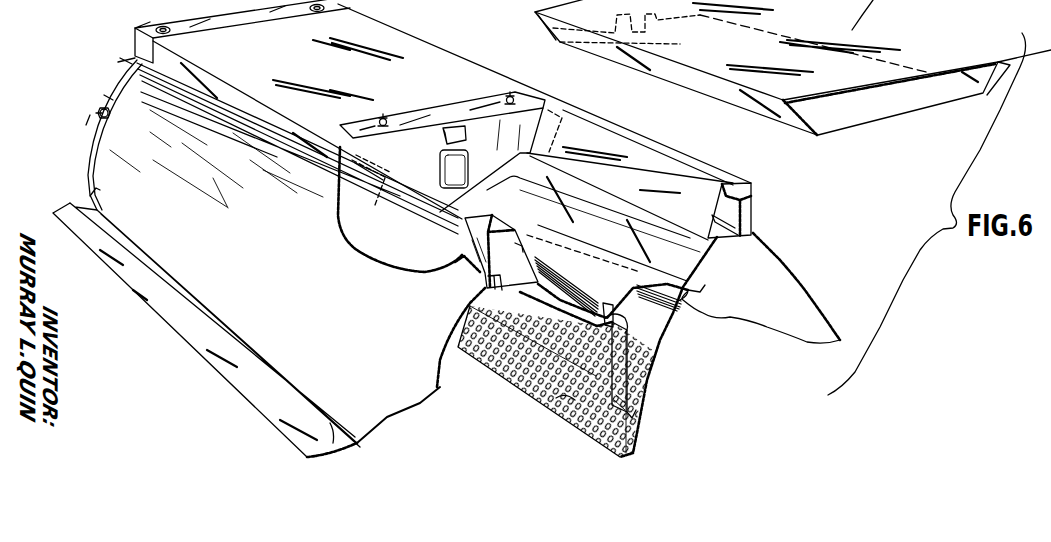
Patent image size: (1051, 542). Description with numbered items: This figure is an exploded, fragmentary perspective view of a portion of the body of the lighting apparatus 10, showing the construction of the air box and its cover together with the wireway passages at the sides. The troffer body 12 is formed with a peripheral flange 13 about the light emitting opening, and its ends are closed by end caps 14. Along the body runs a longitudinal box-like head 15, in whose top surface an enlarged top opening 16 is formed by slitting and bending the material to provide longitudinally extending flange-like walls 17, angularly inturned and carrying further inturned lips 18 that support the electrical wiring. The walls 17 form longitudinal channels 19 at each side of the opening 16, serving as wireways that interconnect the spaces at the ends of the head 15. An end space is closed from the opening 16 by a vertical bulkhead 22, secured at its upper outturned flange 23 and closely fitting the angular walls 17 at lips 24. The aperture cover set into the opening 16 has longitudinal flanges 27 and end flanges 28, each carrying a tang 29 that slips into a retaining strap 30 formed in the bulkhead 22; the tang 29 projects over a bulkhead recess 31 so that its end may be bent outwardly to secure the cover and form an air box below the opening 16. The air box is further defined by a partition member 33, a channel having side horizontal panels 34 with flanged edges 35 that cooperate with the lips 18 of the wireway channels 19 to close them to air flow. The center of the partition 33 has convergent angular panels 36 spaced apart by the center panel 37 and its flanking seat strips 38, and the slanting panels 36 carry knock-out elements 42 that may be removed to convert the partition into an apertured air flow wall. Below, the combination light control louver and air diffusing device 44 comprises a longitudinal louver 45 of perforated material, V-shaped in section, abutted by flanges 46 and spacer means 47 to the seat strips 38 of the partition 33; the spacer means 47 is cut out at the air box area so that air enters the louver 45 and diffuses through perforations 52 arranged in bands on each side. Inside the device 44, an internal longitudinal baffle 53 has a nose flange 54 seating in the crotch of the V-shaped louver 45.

The apparatus 10 is at (112, 65).
The troffer body 12 is at (369, 355).
The peripheral flange 13 is at (236, 379).
The end cap 14 is at (92, 134).
The box-like head 15 is at (231, 92).
The top opening 16 is at (677, 170).
The flange-like walls 17 is at (698, 217).
The inturned lips 18 is at (527, 285).
The longitudinal channels 19 is at (500, 244).
The vertical bulkhead 22 is at (520, 115).
The upper outturned flange 23 is at (428, 117).
The lips 24 is at (568, 133).
The longitudinal flanges 27 is at (746, 113).
The end flanges 28 is at (717, 0).
The tang 29 is at (664, 43).
The retaining strap 30 is at (462, 139).
The bulkhead recess 31 is at (447, 174).
The partition member 33 is at (688, 292).
The side horizontal panels 34 is at (478, 303).
The flanged edges 35 is at (472, 270).
The convergent angular panels 36 is at (700, 260).
The center panel 37 is at (635, 293).
The seat strips 38 is at (625, 292).
The knock-out elements 42 is at (604, 229).
The light control louver and air diffusing device 44 is at (524, 400).
The longitudinal louver 45 is at (650, 392).
The flanges 46 is at (595, 323).
The spacer means 47 is at (620, 388).
The perforations 52 is at (583, 421).
The internal longitudinal baffle 53 is at (606, 334).
The nose flange 54 is at (646, 427).